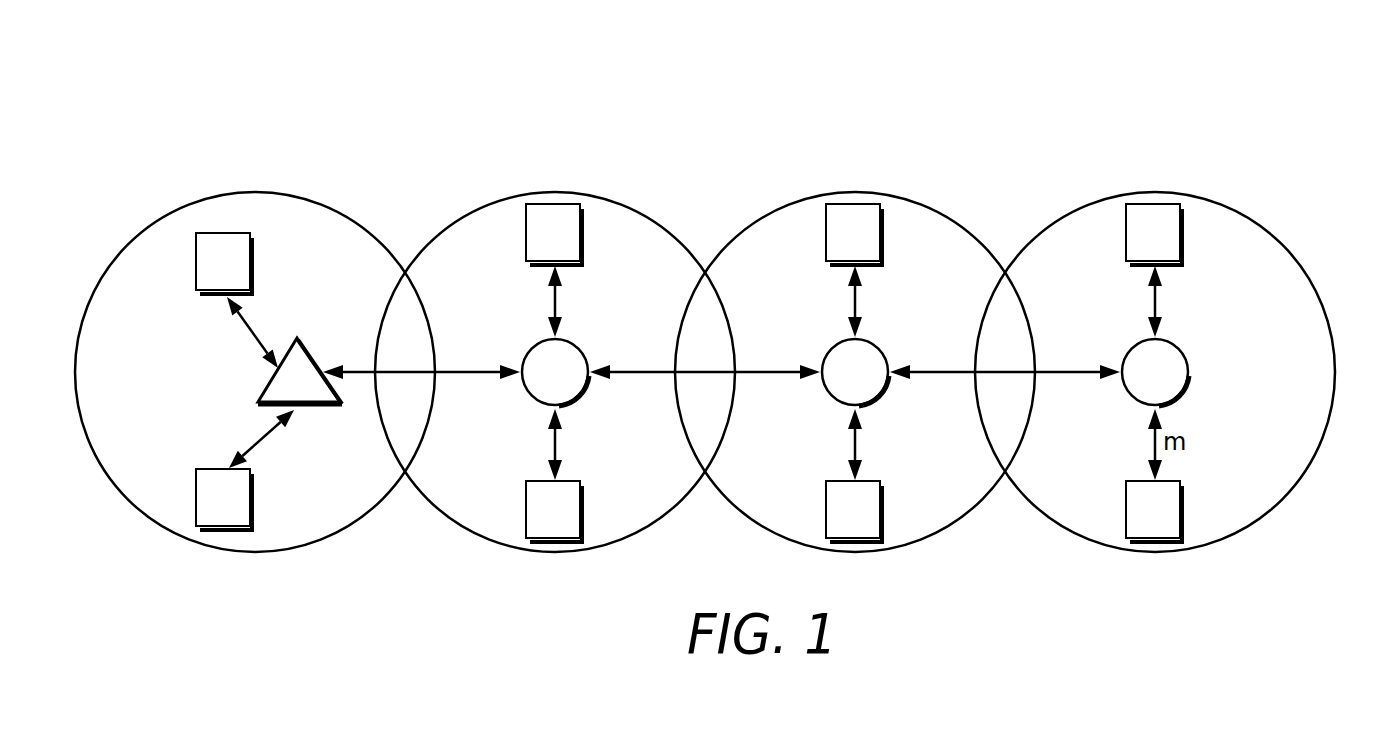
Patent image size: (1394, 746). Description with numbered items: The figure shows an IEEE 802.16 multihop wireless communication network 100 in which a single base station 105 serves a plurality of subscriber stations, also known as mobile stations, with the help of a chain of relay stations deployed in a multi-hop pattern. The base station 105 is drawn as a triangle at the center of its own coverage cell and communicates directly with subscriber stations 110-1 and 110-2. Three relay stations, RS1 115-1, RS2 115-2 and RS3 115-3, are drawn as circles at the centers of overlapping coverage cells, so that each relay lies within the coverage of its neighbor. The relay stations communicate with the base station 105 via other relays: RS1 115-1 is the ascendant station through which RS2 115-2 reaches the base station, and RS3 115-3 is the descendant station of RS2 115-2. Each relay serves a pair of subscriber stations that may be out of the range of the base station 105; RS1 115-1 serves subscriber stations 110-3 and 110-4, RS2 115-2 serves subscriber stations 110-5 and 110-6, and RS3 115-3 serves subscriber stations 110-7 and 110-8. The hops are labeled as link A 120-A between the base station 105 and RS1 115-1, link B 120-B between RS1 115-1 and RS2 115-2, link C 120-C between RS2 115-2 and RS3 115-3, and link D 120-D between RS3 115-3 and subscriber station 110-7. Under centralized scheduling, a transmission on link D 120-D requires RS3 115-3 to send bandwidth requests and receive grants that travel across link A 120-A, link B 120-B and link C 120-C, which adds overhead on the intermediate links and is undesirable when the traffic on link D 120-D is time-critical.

The multihop network 100 is at (1323, 94).
The base station 105 is at (289, 343).
The subscriber station 110-1 is at (224, 232).
The subscriber station 110-2 is at (212, 468).
The subscriber station 110-3 is at (555, 203).
The subscriber station 110-4 is at (563, 480).
The subscriber station 110-5 is at (855, 203).
The subscriber station 110-6 is at (863, 480).
The subscriber station 110-7 is at (1155, 203).
The subscriber station 110-8 is at (1165, 480).
The relay station RS1 115-1 is at (542, 340).
The relay station RS2 115-2 is at (842, 340).
The relay station RS3 115-3 is at (1187, 353).
The link A 120-A is at (342, 364).
The link B 120-B is at (639, 366).
The link C 120-C is at (939, 366).
The link D 120-D is at (1157, 296).